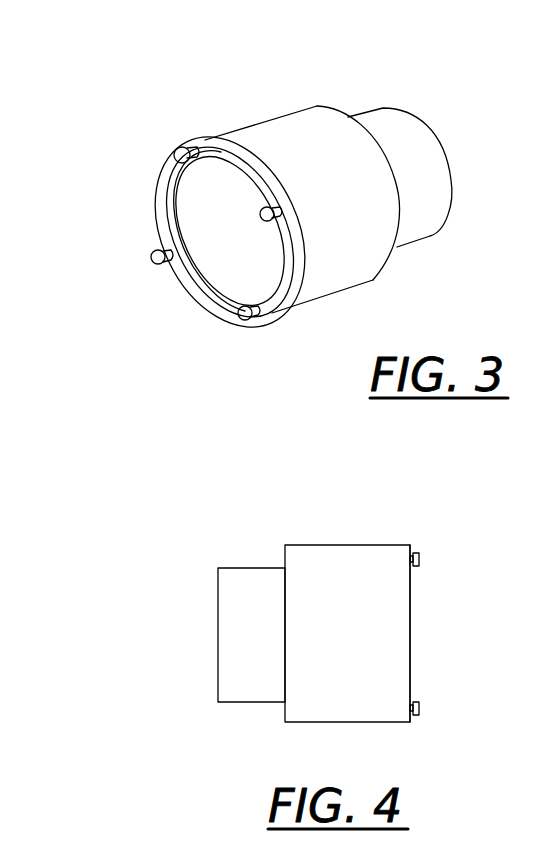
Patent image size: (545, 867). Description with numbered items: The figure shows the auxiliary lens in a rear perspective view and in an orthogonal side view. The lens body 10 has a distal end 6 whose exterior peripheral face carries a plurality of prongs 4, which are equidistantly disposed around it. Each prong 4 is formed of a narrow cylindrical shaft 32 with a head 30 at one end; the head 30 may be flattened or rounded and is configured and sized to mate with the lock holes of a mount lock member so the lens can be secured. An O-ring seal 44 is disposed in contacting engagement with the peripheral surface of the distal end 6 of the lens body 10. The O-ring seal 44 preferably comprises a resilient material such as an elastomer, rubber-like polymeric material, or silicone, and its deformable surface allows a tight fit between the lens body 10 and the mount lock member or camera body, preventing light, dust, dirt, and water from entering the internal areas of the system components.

In FIG. 3, the prong 4 is at (151, 258).
In FIG. 3, the distal end 6 is at (272, 344).
In FIG. 3, the lens body 10 is at (283, 116).
In FIG. 4, the lens body 10 is at (314, 633).
In FIG. 3, the head 30 is at (183, 148).
In FIG. 4, the head 30 is at (417, 553).
In FIG. 3, the narrow cylindrical shaft 32 is at (170, 264).
In FIG. 4, the narrow cylindrical shaft 32 is at (414, 716).
In FIG. 3, the O-ring seal 44 is at (296, 288).
In FIG. 4, the O-ring seal 44 is at (412, 621).